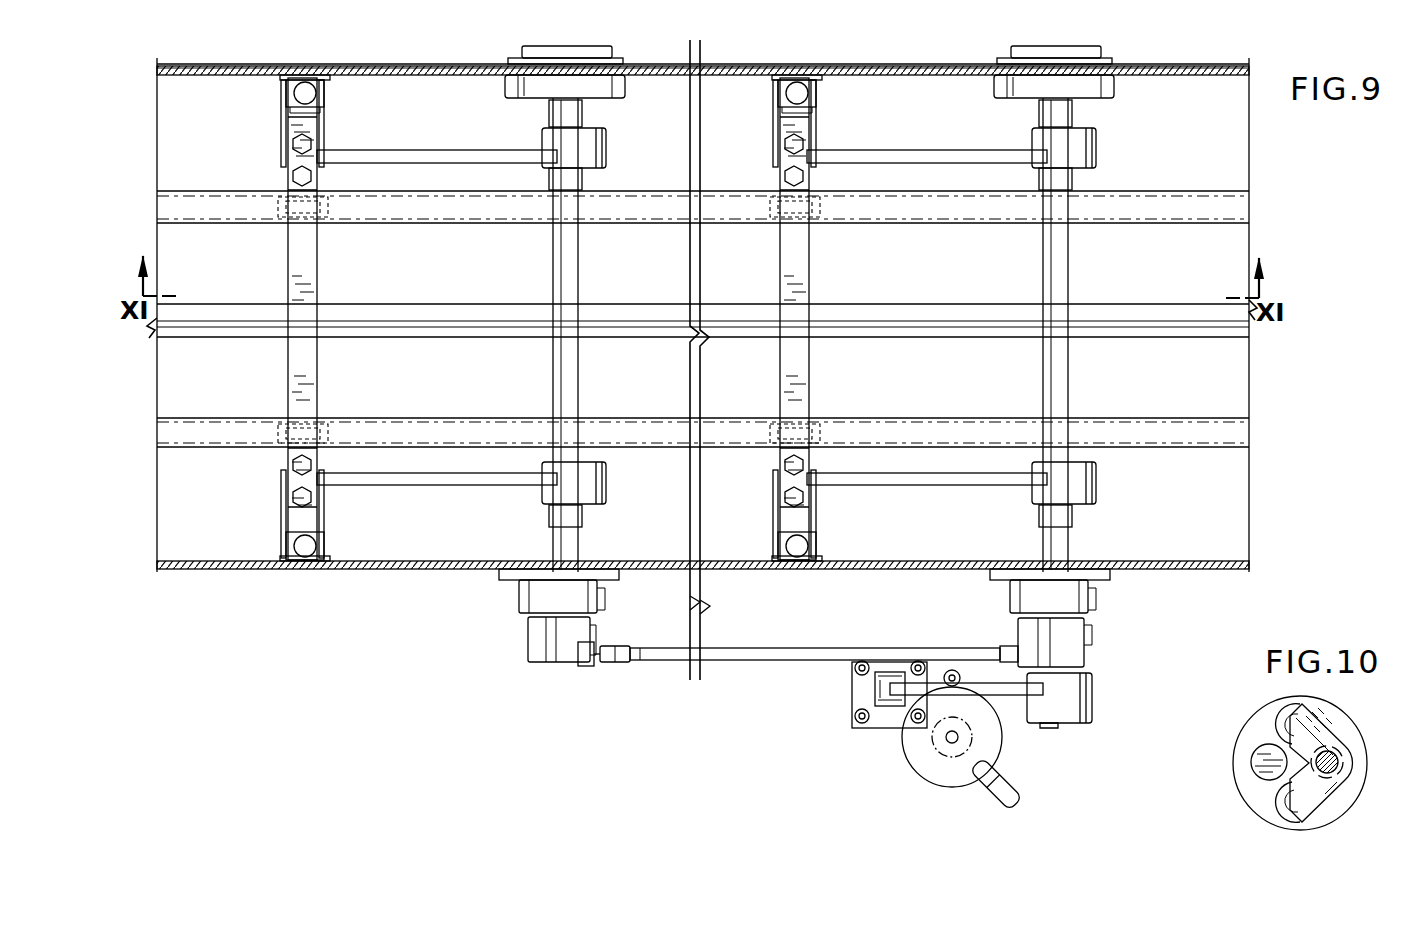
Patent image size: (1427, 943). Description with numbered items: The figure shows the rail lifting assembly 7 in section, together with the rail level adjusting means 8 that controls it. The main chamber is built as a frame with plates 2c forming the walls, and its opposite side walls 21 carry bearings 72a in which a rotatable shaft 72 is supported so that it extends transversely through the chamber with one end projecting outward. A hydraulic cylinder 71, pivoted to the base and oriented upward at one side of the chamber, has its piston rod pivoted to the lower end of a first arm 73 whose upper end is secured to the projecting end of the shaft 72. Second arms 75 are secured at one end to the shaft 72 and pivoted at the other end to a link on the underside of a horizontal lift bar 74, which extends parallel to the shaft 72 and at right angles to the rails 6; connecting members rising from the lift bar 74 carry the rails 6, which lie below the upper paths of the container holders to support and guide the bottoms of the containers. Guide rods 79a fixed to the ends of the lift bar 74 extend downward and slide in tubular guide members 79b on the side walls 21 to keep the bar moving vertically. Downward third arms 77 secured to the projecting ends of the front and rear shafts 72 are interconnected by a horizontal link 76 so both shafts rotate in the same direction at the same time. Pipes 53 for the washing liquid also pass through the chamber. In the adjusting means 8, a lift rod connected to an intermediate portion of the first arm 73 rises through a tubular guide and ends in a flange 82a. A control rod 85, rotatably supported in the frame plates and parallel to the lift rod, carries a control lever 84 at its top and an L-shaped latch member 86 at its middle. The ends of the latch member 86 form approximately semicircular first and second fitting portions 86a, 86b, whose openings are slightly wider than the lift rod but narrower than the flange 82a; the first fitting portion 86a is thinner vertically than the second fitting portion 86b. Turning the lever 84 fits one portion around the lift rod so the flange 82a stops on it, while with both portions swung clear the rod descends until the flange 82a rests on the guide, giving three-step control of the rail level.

In FIG. 9, the plates 2c is at (745, 64).
In FIG. 9, the side walls 21 is at (881, 64).
In FIG. 9, the rails 6 is at (1165, 223).
In FIG. 9, the rail lifting assembly 7 is at (815, 282).
In FIG. 9, the pipes 53 is at (927, 318).
In FIG. 9, the horizontal lift bar 74 is at (317, 384).
In FIG. 9, the rotatable shaft 72 is at (578, 384).
In FIG. 9, the bearings 72a is at (562, 50).
In FIG. 9, the second arms 75 is at (444, 150).
In FIG. 9, the guide rods 79a is at (323, 93).
In FIG. 9, the tubular guide members 79b is at (292, 93).
In FIG. 9, the horizontal link 76 is at (812, 648).
In FIG. 9, the third arms 77 is at (528, 642).
In FIG. 9, the hydraulic cylinder 71 is at (852, 705).
In FIG. 9, the first arm 73 is at (1010, 700).
In FIG. 9, the rail level adjusting means 8 is at (906, 758).
In FIG. 9, the control lever 84 is at (1003, 806).
In FIG. 10, the control rod 85 is at (1338, 756).
In FIG. 10, the latch member 86 is at (1330, 792).
In FIG. 10, the first fitting portion 86a is at (1262, 794).
In FIG. 10, the second fitting portion 86b is at (1260, 729).
In FIG. 10, the flange 82a is at (1260, 773).